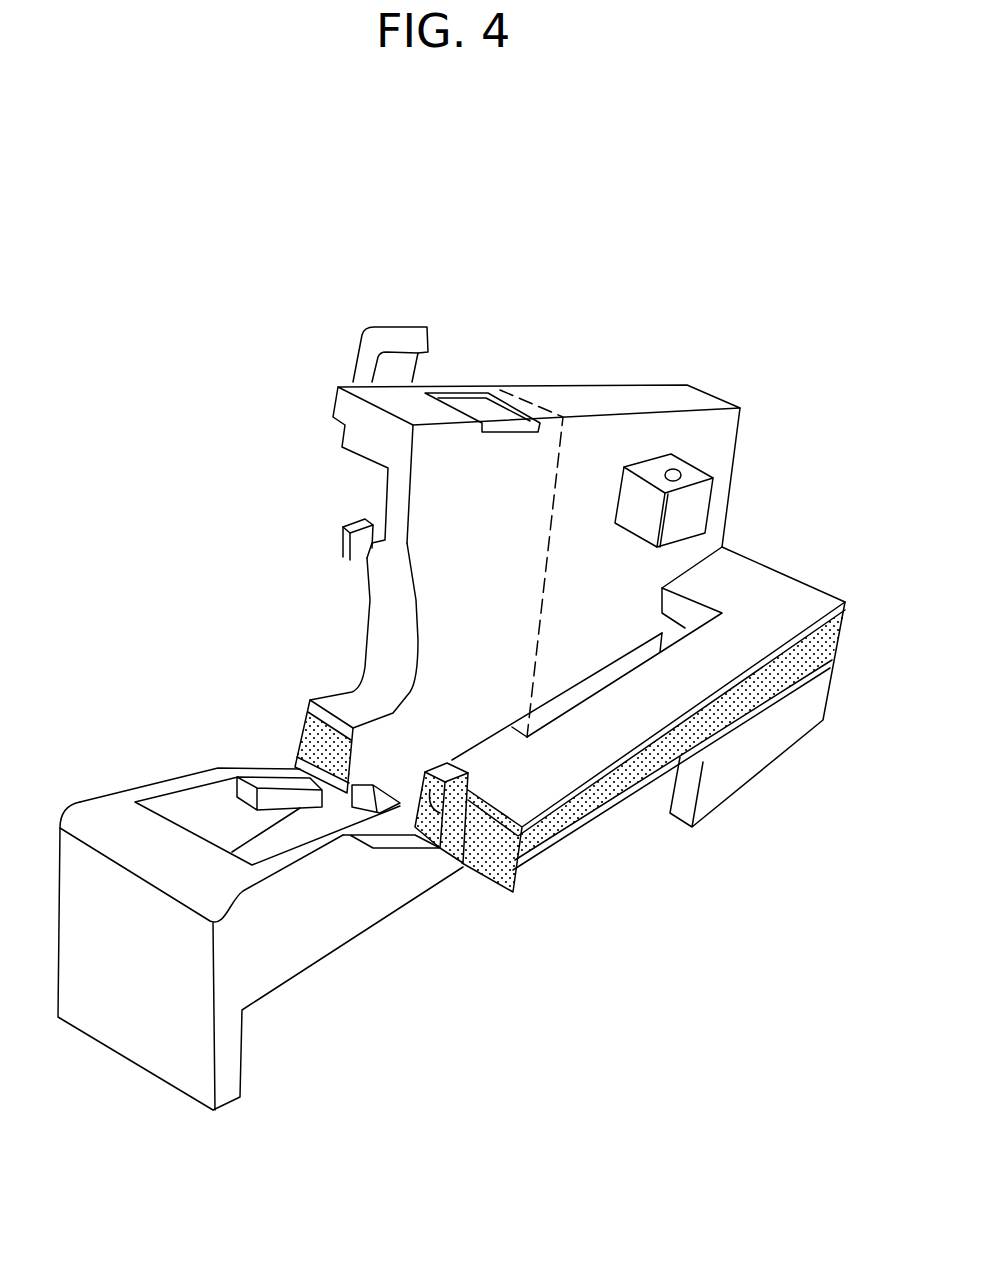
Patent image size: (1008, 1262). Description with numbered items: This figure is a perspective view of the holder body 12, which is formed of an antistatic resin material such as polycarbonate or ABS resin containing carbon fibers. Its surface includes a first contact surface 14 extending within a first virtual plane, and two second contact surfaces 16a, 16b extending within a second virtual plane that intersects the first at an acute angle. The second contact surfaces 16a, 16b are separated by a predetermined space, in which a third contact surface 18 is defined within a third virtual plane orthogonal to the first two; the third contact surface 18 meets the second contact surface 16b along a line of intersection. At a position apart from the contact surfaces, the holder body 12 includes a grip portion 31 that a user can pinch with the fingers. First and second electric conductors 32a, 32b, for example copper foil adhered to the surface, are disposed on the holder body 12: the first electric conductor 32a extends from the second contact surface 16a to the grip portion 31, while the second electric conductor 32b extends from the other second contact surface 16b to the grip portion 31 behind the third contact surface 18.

The holder body 12 is at (338, 405).
The first contact surface 14 is at (112, 803).
The second contact surface 16a is at (545, 858).
The second contact surface 16b is at (310, 700).
The third contact surface 18 is at (487, 566).
The grip portion 31 is at (818, 587).
The first electric conductor 32a is at (488, 855).
The second electric conductor 32b is at (317, 735).